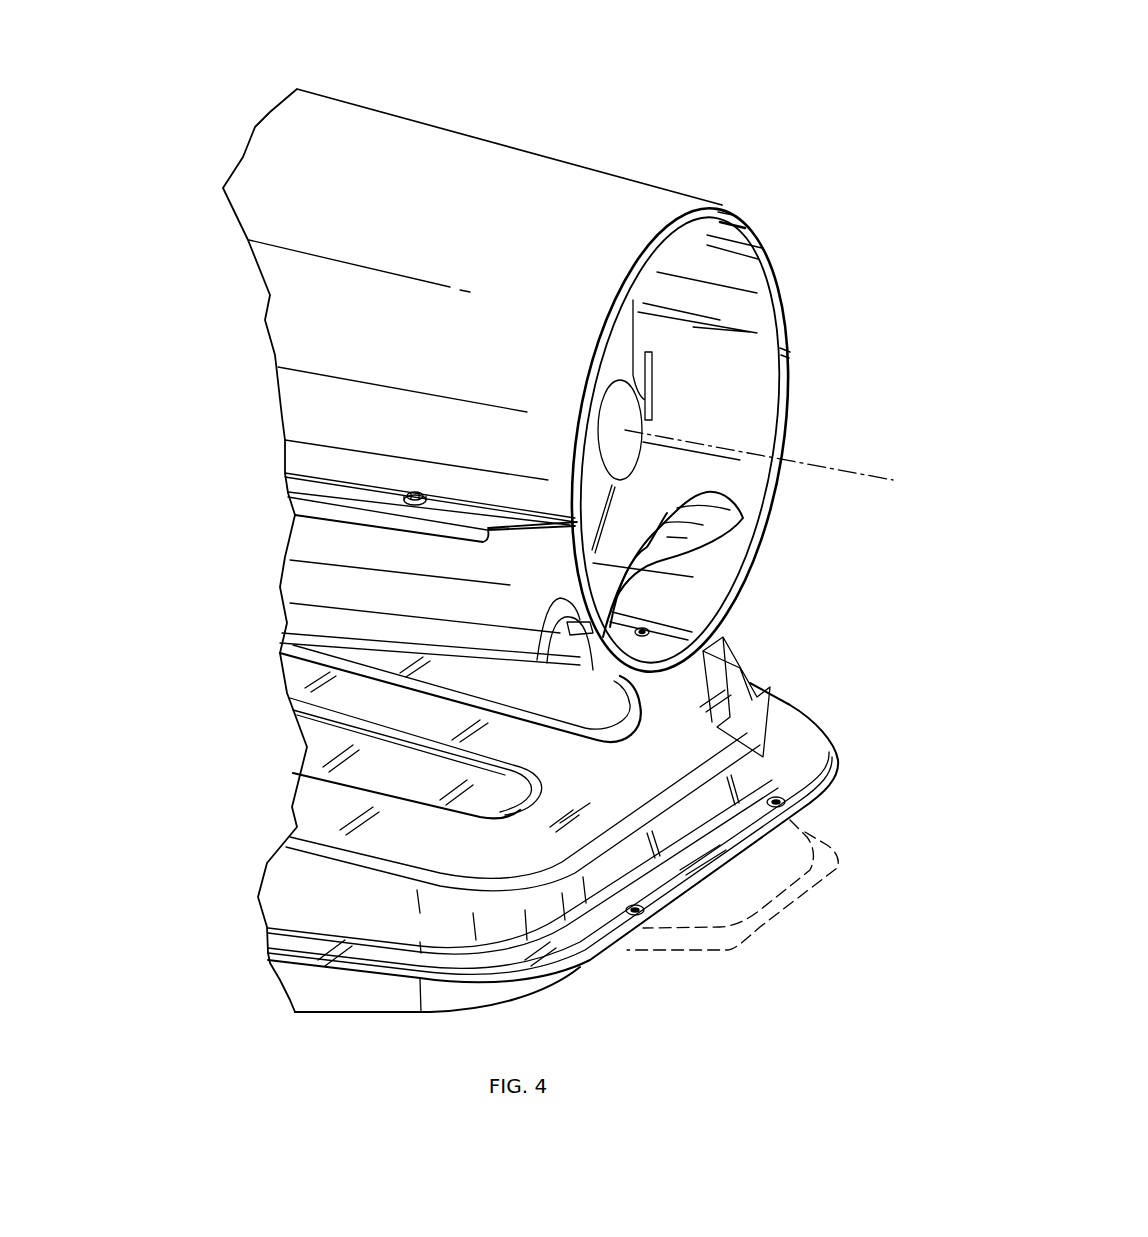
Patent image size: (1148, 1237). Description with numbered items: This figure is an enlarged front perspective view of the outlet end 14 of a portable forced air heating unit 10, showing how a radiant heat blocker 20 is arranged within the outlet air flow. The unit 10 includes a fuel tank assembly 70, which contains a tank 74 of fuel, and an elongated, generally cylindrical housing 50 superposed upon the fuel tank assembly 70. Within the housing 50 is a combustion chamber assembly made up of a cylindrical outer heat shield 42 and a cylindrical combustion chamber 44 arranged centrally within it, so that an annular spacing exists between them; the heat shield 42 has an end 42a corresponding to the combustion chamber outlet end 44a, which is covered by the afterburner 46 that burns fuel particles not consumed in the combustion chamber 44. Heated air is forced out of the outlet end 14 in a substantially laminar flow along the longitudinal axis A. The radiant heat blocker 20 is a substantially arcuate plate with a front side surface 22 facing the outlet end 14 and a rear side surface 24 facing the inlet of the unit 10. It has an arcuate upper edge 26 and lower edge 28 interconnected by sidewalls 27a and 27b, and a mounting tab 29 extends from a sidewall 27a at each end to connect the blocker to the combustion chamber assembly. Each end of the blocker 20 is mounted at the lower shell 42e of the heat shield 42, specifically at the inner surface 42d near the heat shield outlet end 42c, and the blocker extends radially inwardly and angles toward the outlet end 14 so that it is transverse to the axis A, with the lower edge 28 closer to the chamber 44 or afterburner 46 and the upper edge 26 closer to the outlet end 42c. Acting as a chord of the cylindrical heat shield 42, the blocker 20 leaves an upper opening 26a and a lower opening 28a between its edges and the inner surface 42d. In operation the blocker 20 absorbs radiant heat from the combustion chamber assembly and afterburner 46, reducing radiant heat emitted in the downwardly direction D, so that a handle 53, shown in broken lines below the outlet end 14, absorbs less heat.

The portable forced air heating unit 10 is at (170, 50).
The outlet end 14 is at (847, 276).
The radiant heat blocker 20 is at (752, 474).
The front side surface 22 is at (665, 548).
The rear side surface 24 is at (587, 583).
The upper edge 26 is at (692, 492).
The upper opening 26a is at (722, 289).
The sidewall 27a is at (720, 540).
The sidewall 27b is at (745, 514).
The lower edge 28 is at (543, 628).
The lower opening 28a is at (664, 628).
The mounting tab 29 is at (550, 628).
The heat shield 42 is at (699, 215).
The heat shield end 42a is at (679, 231).
The heat shield outlet end 42c is at (763, 260).
The inner surface 42d is at (666, 476).
The lower shell 42e is at (700, 597).
The combustion chamber 44 is at (655, 320).
The combustion chamber outlet end 44a is at (676, 328).
The afterburner 46 is at (620, 364).
The housing 50 is at (445, 150).
The handle 53 is at (815, 882).
The fuel tank assembly 70 is at (272, 896).
The tank 74 is at (365, 912).
The longitudinal axis A is at (858, 470).
The downwardly direction D is at (750, 695).